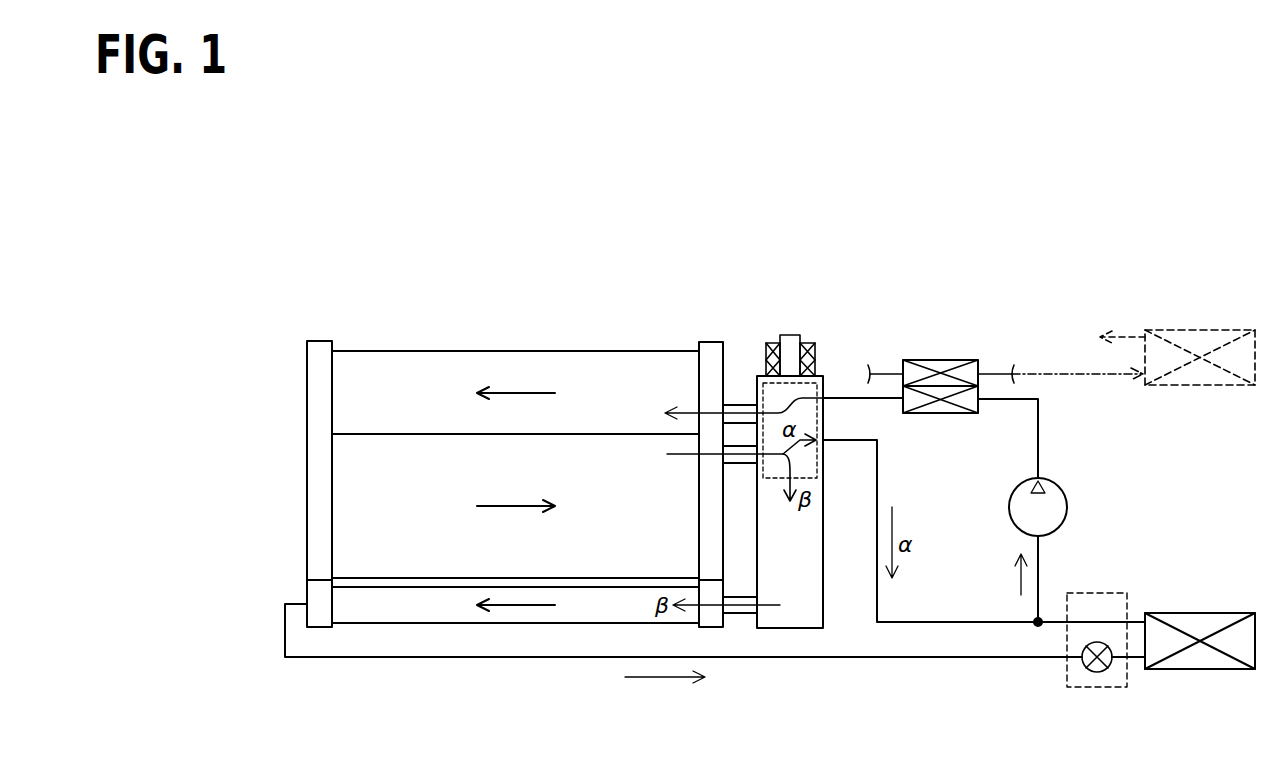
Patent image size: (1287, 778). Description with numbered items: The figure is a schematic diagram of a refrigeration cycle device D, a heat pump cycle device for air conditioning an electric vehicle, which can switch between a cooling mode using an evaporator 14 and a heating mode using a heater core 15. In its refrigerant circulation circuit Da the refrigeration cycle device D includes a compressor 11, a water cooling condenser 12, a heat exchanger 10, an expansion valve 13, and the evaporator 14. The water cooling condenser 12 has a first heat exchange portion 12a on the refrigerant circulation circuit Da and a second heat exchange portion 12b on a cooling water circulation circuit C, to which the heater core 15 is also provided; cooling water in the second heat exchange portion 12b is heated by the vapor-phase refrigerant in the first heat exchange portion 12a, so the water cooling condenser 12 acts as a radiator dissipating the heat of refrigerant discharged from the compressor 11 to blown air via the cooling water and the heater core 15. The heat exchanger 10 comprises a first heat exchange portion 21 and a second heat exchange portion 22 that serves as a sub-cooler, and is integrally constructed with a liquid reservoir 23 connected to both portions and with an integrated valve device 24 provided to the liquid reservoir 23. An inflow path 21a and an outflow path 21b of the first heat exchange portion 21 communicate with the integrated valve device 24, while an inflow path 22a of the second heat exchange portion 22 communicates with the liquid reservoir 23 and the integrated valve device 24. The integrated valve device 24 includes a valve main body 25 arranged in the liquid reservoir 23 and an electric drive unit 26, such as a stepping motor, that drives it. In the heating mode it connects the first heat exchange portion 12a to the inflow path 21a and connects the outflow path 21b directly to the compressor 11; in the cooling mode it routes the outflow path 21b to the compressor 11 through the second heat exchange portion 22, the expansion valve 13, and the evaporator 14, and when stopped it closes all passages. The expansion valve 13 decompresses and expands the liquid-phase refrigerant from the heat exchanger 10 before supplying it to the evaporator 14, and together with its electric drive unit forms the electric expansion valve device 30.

The heat exchanger 10 is at (536, 350).
The compressor 11 is at (1067, 500).
The water cooling condenser 12 is at (962, 413).
The first heat exchange portion 12a is at (940, 413).
The second heat exchange portion 12b is at (940, 360).
The expansion valve 13 is at (1097, 672).
The evaporator 14 is at (1197, 613).
The heater core 15 is at (1200, 330).
The first heat exchange portion 21 is at (455, 360).
The inflow path 21a is at (740, 410).
The outflow path 21b is at (740, 463).
The second heat exchange portion 22 is at (513, 598).
The inflow path 22a is at (738, 598).
The liquid reservoir 23 is at (825, 548).
The integrated valve device 24 is at (823, 412).
The valve main body 25 is at (823, 455).
The electric drive unit 26 is at (766, 350).
The expansion valve device 30 is at (1127, 680).
The refrigeration cycle device D is at (908, 277).
The refrigerant circulation circuit Da is at (1040, 436).
The cooling water circulation circuit C is at (993, 365).